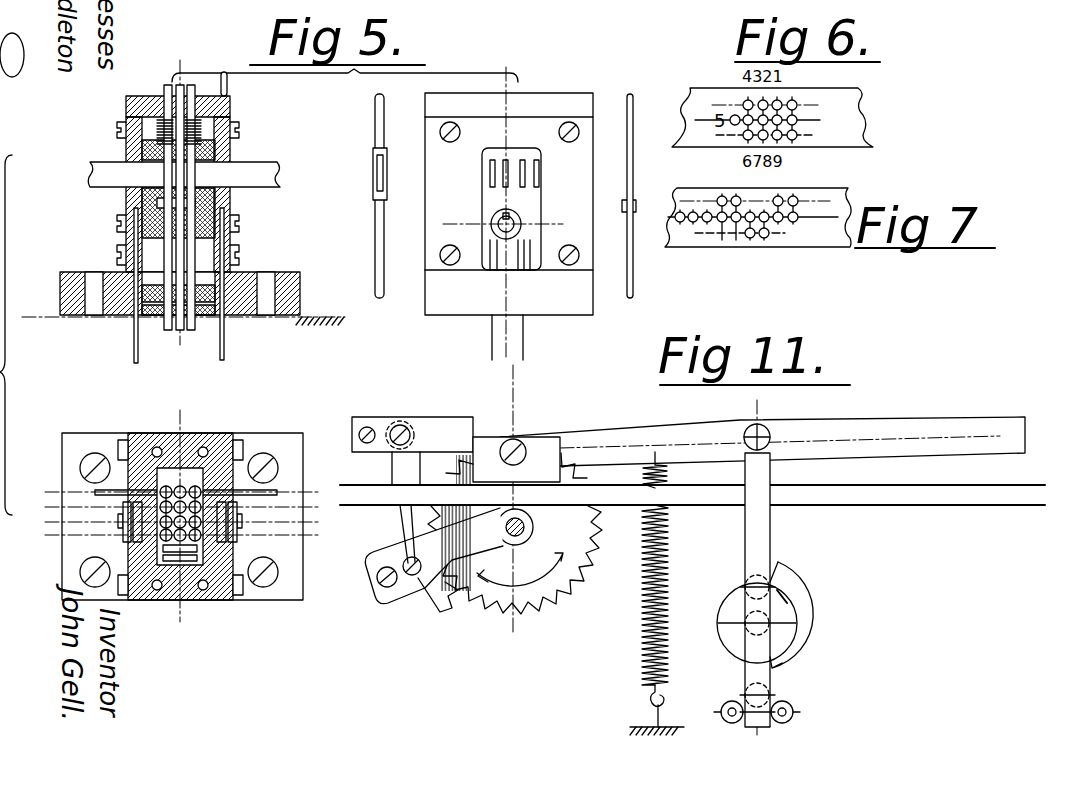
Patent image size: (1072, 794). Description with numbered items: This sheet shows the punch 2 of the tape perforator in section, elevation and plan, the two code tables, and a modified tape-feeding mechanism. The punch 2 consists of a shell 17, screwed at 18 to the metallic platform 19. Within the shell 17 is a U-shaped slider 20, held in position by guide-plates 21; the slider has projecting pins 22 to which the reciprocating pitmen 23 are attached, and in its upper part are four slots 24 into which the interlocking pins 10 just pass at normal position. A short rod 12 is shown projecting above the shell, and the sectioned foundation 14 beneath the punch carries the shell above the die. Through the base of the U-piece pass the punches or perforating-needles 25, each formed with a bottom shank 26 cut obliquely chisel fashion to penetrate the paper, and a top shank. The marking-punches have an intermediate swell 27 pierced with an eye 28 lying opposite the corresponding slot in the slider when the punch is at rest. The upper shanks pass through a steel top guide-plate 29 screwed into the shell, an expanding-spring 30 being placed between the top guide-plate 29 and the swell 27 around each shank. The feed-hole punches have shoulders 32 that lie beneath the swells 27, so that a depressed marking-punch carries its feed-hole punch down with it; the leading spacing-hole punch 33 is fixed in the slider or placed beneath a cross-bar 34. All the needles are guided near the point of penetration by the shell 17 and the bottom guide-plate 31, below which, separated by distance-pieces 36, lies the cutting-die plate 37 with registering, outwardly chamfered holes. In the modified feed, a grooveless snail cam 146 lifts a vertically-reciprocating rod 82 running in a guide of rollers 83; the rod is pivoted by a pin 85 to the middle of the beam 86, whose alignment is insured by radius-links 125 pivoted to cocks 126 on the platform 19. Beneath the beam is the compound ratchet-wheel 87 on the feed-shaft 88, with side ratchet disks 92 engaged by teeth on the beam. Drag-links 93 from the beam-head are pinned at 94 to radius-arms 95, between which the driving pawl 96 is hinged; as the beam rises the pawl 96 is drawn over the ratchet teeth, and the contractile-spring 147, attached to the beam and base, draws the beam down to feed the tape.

In FIG. 5, the punch 2 is at (231, 102).
In FIG. 5, the interlocking pins 10 is at (277, 492).
In FIG. 5, the rod 12 is at (226, 74).
In FIG. 5, the base 14 is at (159, 293).
In FIG. 5, the shell 17 is at (133, 271).
In FIG. 5, the screw fastening 18 is at (267, 273).
In FIG. 5, the metallic platform 19 is at (355, 306).
In FIG. 5, the U-shaped slider 20 is at (218, 196).
In FIG. 5, the guide-plates 21 is at (240, 130).
In FIG. 5, the projecting pins 22 is at (239, 223).
In FIG. 5, the reciprocating pitmen 23 is at (222, 340).
In FIG. 5, the slots 24 is at (215, 178).
In FIG. 5, the punches or perforating-needles 25 is at (222, 300).
In FIG. 5, the bottom shank 26 is at (650, 290).
In FIG. 5, the intermediate swell 27 is at (130, 149).
In FIG. 5, the eye 28 is at (160, 176).
In FIG. 5, the top guide-plate 29 is at (148, 97).
In FIG. 5, the expanding-spring 30 is at (117, 123).
In FIG. 5, the guide-plate 31 is at (136, 300).
In FIG. 5, the shoulders 32 is at (160, 204).
In FIG. 5, the leading spacing-hole punch 33 is at (183, 560).
In FIG. 5, the cross-bar 34 is at (196, 562).
In FIG. 5, the distance-pieces 36 is at (143, 309).
In FIG. 5, the cutting-die plate 37 is at (200, 292).
In FIG. 11, the vertically-reciprocating rod 82 is at (748, 668).
In FIG. 11, the rollers 83 is at (794, 706).
In FIG. 11, the pin 85 is at (772, 437).
In FIG. 11, the beam 86 is at (409, 414).
In FIG. 11, the compound ratchet-wheel 87 is at (500, 605).
In FIG. 11, the feed-shaft 88 is at (598, 540).
In FIG. 11, the side ratchet-toothed disks 92 is at (520, 547).
In FIG. 11, the drag-links 93 is at (400, 528).
In FIG. 11, the pin 94 is at (414, 578).
In FIG. 11, the radius-arms 95 is at (434, 556).
In FIG. 11, the pawl 96 is at (445, 602).
In FIG. 11, the radius-links 125 is at (723, 437).
In FIG. 11, the cocks 126 is at (487, 434).
In FIG. 11, the cam 146 is at (810, 620).
In FIG. 11, the contractile-spring 147 is at (642, 622).